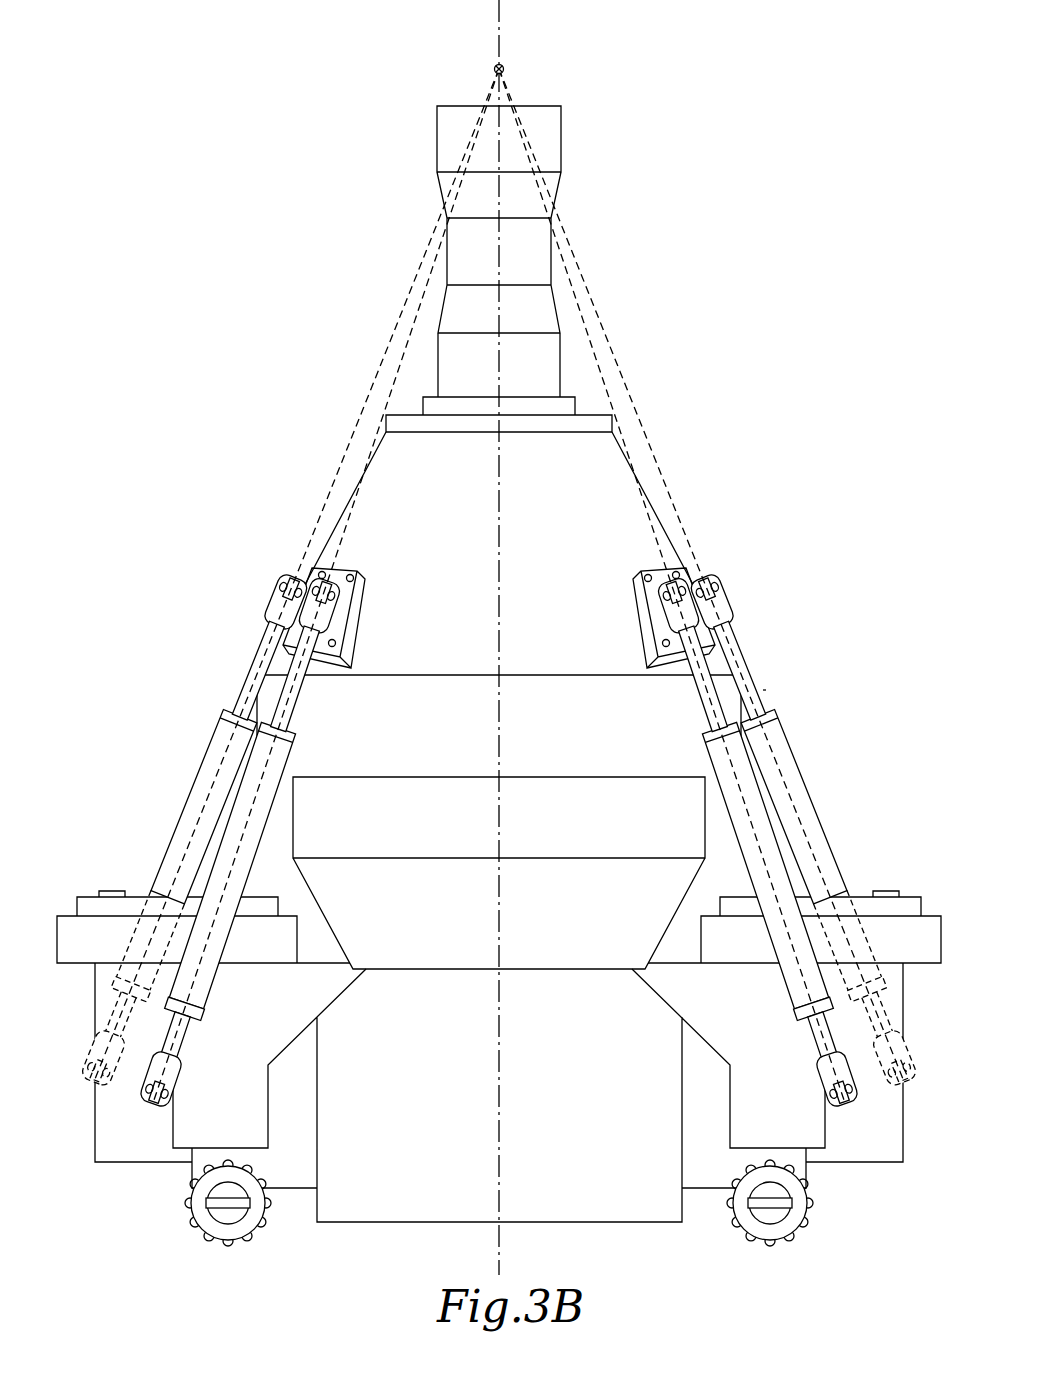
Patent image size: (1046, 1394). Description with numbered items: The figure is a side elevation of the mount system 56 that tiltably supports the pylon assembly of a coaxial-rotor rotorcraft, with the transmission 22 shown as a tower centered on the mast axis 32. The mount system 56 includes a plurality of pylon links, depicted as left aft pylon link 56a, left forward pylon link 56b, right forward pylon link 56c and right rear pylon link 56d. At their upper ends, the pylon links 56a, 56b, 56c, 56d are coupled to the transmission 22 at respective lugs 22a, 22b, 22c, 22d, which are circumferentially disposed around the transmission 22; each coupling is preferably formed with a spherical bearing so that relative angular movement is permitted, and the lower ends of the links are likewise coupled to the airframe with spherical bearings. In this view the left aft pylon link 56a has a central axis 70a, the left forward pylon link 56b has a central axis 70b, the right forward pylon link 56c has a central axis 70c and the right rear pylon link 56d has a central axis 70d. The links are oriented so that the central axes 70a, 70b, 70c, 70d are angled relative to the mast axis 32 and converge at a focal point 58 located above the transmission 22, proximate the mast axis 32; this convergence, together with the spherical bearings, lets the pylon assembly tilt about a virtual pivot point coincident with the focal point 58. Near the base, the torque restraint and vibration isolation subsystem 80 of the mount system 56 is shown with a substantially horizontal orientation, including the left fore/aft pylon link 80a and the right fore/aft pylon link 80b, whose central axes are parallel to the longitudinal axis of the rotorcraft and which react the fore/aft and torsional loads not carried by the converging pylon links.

The transmission 22 is at (545, 523).
The lug 22a is at (700, 583).
The lug 22b is at (661, 596).
The lug 22c is at (338, 596).
The lug 22d is at (298, 585).
The mast axis 32 is at (501, 17).
The mount system 56 is at (766, 689).
The left aft pylon link 56a is at (701, 576).
The left forward pylon link 56b is at (686, 586).
The right forward pylon link 56c is at (311, 586).
The right rear pylon link 56d is at (296, 576).
The focal point 58 is at (504, 67).
The central axis 70a is at (772, 750).
The central axis 70b is at (755, 832).
The central axis 70c is at (242, 830).
The central axis 70d is at (228, 750).
The torque restraint and vibration isolation subsystem 80 is at (811, 1241).
The left fore/aft pylon link 80a is at (797, 1221).
The right fore/aft pylon link 80b is at (200, 1221).